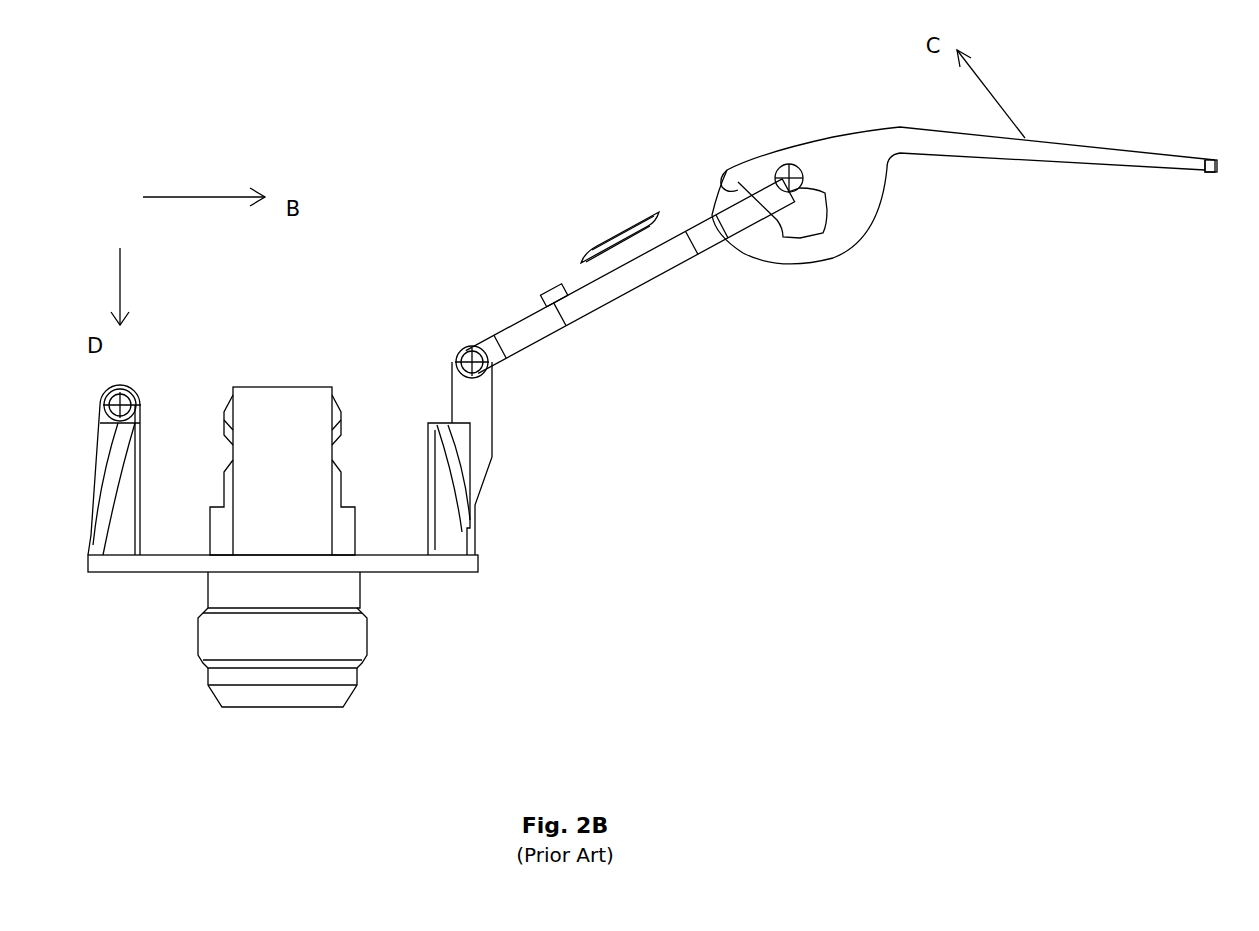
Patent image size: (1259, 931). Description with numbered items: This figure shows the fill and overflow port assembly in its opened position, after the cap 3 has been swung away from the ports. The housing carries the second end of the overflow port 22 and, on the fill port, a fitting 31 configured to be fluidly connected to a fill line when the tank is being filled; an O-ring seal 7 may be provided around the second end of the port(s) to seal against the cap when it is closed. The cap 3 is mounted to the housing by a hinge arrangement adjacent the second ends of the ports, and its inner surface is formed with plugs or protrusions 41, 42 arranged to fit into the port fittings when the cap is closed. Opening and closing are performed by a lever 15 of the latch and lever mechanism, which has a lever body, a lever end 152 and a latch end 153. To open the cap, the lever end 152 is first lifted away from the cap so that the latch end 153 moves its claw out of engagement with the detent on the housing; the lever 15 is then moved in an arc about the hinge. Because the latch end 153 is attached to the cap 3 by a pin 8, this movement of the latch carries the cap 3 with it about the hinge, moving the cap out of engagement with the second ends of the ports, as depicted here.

The cap 3 is at (647, 278).
The O-ring seal 7 is at (333, 708).
The pin 8 is at (803, 180).
The lever 15 is at (972, 202).
The second end of the overflow port 22 is at (328, 388).
The fitting 31 is at (233, 388).
The plug 41 is at (627, 205).
The plug 42 is at (558, 283).
The lever end 152 is at (1215, 172).
The latch end 153 is at (760, 253).